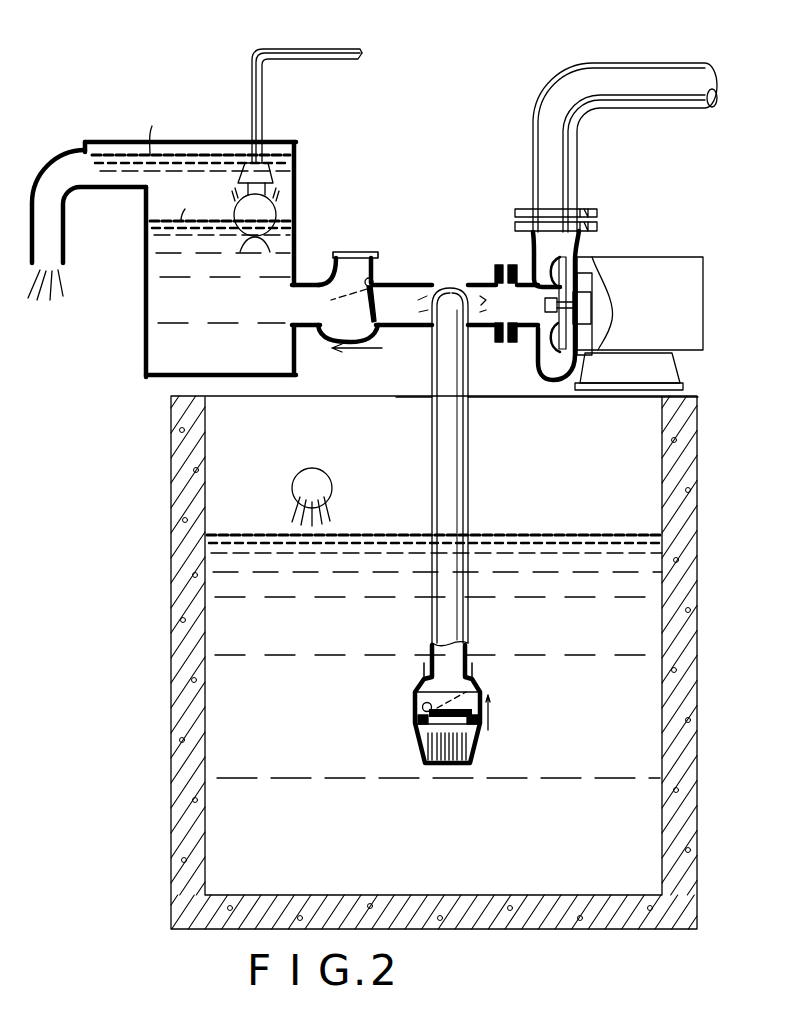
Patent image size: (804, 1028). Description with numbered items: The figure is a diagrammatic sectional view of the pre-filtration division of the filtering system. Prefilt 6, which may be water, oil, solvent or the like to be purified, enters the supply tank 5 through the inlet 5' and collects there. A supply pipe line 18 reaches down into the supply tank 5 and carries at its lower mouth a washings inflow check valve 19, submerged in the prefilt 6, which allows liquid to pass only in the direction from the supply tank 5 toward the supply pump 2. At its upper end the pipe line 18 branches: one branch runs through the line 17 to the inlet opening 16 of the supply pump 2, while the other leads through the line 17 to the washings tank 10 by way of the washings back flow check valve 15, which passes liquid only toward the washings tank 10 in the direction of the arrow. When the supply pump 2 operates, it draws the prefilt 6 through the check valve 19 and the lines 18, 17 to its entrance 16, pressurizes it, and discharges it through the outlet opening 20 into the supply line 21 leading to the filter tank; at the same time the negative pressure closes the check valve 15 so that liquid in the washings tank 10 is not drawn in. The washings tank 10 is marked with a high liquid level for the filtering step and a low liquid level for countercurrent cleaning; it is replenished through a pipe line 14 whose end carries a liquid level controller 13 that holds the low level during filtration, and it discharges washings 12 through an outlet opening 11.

The supply pump 2 is at (597, 242).
The supply tank 5 is at (401, 662).
The inlet 5' is at (312, 475).
The prefilt 6 is at (566, 548).
The washings tank 10 is at (144, 310).
The outlet opening 11 is at (66, 227).
The washings 12 is at (66, 286).
The liquid level controller 13 is at (278, 211).
The pipe line 14 is at (304, 53).
The washings back flow check valve 15 is at (374, 280).
The inlet opening 16 is at (509, 303).
The line 17 is at (424, 322).
The supply pipe line 18 is at (462, 481).
The washings inflow check valve 19 is at (416, 713).
The outlet opening 20 is at (548, 236).
The supply line 21 is at (540, 148).